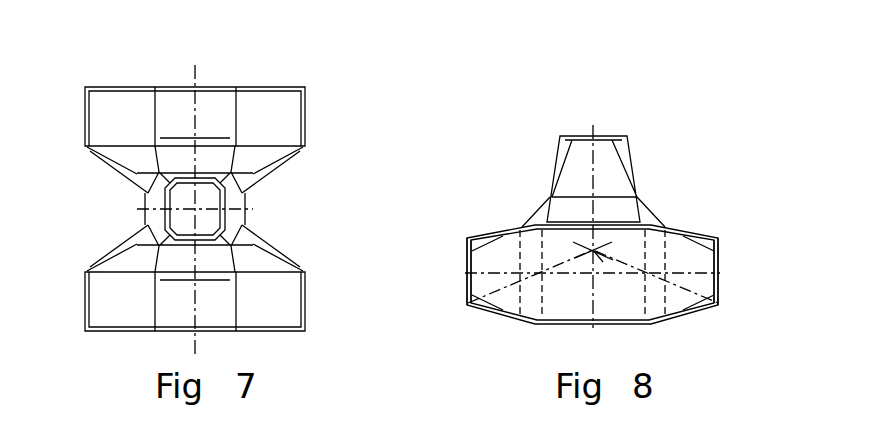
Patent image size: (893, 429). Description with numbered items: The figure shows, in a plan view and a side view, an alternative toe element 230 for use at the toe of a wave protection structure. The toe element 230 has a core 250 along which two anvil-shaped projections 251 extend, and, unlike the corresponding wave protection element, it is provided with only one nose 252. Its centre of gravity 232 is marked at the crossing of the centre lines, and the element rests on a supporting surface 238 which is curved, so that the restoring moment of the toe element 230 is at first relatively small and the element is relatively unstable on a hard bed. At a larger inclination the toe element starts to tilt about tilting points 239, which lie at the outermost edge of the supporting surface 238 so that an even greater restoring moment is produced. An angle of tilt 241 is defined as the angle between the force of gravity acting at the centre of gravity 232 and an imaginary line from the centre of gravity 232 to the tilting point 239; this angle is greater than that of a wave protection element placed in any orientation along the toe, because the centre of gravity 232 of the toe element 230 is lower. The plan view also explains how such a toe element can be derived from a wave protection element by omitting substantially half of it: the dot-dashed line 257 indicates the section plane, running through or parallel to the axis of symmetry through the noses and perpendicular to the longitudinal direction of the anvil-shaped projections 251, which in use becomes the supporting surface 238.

In FIG. 7, the toe element 230 is at (252, 169).
In FIG. 8, the toe element 230 is at (591, 211).
In FIG. 7, the centre of gravity 232 is at (200, 208).
In FIG. 8, the centre of gravity 232 is at (595, 252).
In FIG. 8, the supporting surface 238 is at (575, 332).
In FIG. 8, the tilting points 239 is at (462, 317).
In FIG. 8, the angle of tilt 241 is at (600, 268).
In FIG. 7, the core 250 is at (260, 215).
In FIG. 7, the anvil-shaped projections 251 is at (313, 112).
In FIG. 8, the nose 252 is at (642, 165).
In FIG. 7, the dot-dashed line 257 is at (198, 82).